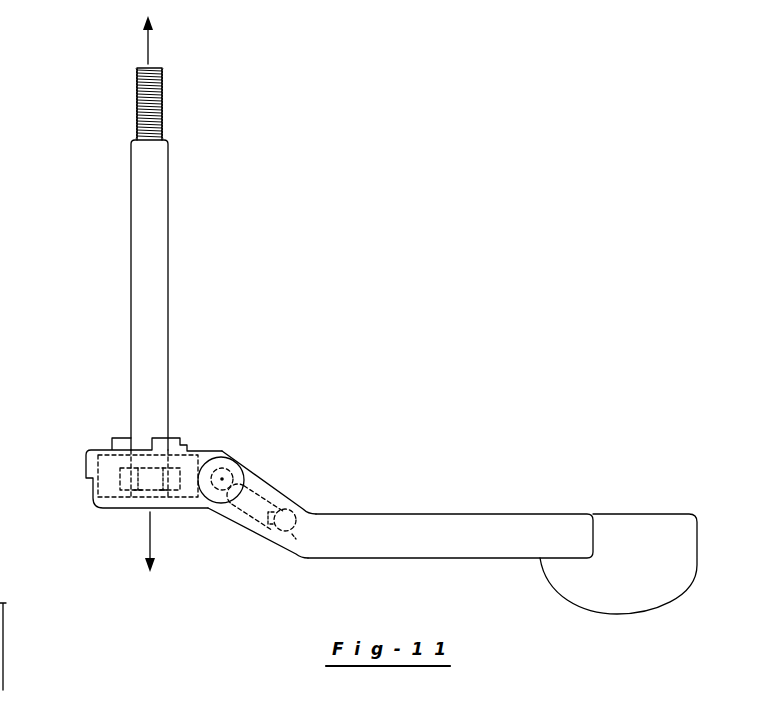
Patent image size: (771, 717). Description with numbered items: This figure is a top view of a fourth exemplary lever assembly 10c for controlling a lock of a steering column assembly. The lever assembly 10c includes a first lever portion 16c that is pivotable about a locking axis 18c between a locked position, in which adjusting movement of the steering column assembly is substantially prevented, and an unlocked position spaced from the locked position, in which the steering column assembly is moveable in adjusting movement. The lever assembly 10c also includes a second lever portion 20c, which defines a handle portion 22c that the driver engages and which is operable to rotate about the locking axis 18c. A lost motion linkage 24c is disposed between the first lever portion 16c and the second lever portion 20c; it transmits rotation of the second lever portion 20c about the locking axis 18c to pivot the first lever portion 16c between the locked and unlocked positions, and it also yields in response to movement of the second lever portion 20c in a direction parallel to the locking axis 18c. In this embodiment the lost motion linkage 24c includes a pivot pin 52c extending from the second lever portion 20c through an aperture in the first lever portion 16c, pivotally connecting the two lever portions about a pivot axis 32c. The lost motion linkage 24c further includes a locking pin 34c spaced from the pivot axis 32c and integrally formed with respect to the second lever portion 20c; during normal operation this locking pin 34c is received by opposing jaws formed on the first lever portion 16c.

The lever assembly 10c is at (466, 297).
The first lever portion 16c is at (76, 419).
The locking axis 18c is at (148, 48).
The second lever portion 20c is at (432, 508).
The handle portion 22c is at (666, 582).
The lost motion linkage 24c is at (330, 465).
The pivot axis 32c is at (222, 478).
The locking pin 34c is at (282, 532).
The pivot pin 52c is at (222, 478).